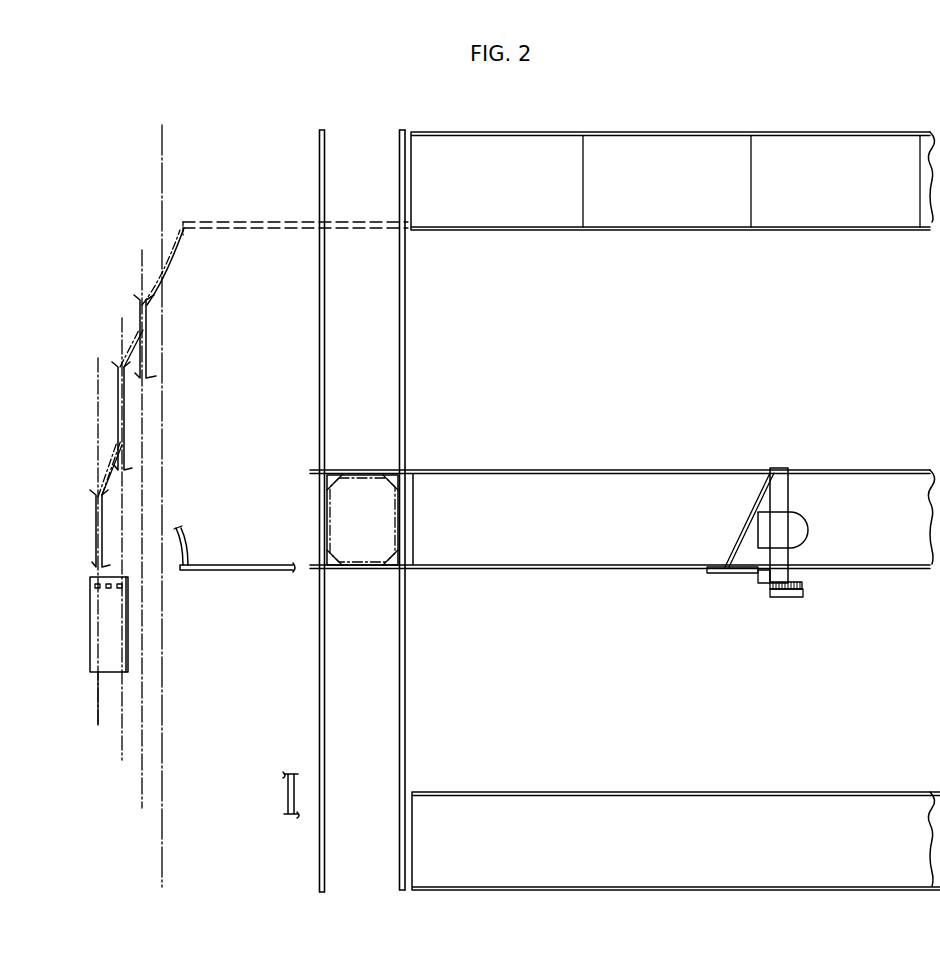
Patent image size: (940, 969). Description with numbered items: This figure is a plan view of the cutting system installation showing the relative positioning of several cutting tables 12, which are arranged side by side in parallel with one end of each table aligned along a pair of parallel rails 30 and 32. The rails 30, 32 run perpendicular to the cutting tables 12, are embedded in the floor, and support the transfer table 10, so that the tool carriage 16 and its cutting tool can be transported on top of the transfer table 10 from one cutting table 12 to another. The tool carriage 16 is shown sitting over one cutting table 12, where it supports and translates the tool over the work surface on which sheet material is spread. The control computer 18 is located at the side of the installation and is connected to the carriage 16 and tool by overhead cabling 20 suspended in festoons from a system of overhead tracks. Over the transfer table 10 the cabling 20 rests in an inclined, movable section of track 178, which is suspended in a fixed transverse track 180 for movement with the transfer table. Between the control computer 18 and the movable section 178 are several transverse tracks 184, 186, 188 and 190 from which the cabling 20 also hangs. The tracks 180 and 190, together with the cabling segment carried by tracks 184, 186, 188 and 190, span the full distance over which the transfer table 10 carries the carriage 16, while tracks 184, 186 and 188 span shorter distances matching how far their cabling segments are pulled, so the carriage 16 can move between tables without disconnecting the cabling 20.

The transfer table 10 is at (360, 573).
The cutting table 12 is at (513, 155).
The tool carriage 16 is at (778, 469).
The control computer 18 is at (128, 635).
The overhead cabling 20 is at (183, 533).
The rail 30 is at (320, 718).
The rail 32 is at (404, 715).
The movable section of track 178 is at (295, 220).
The fixed transverse track 180 is at (288, 796).
The transverse track 184 is at (98, 682).
The transverse track 186 is at (120, 497).
The transverse track 188 is at (144, 415).
The transverse track 190 is at (166, 320).